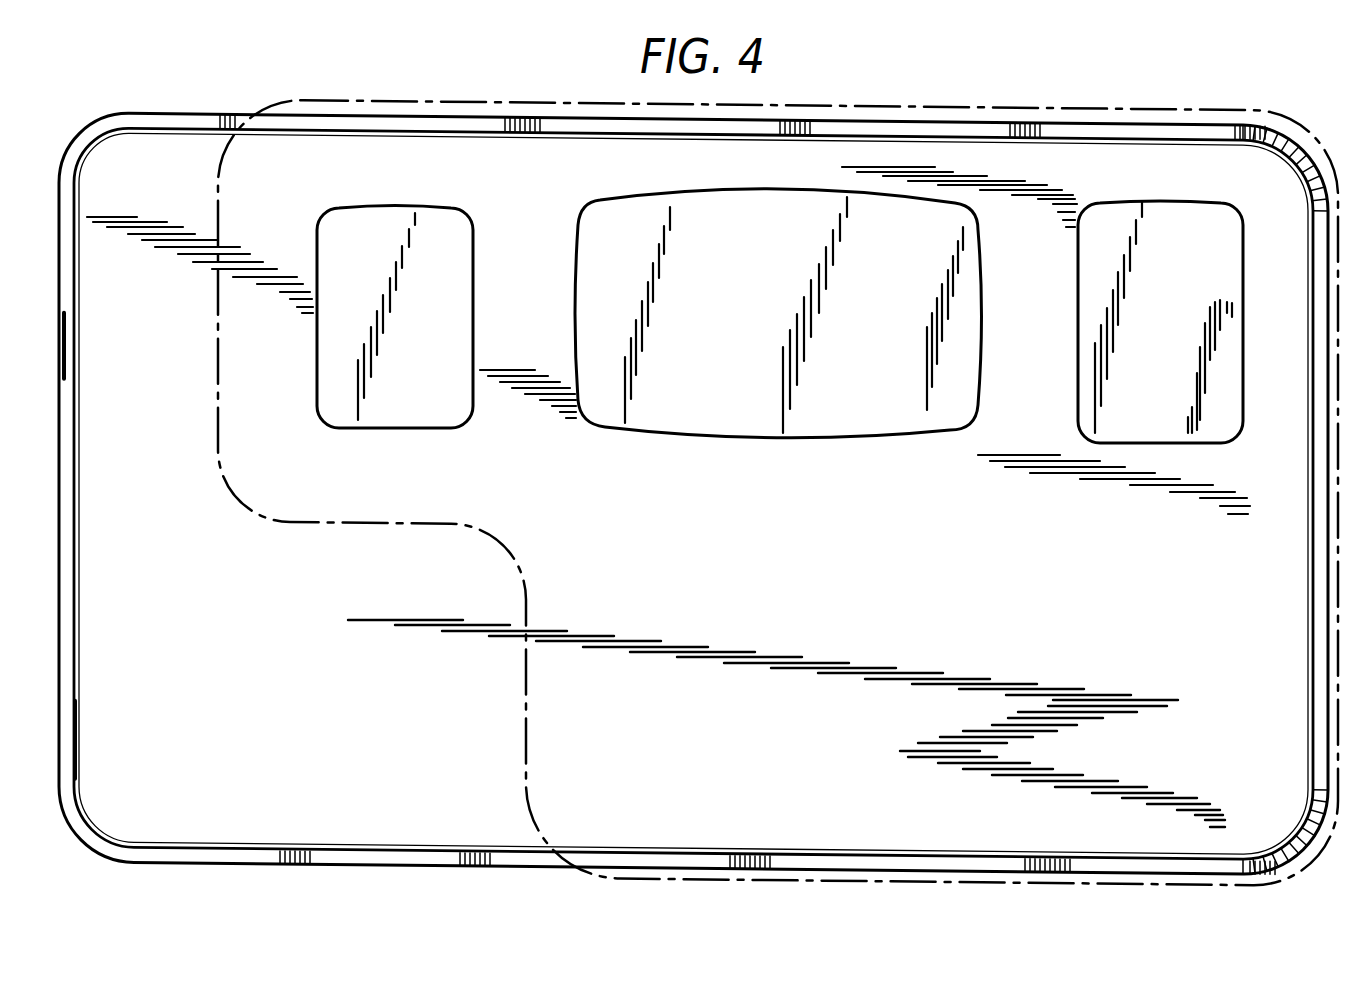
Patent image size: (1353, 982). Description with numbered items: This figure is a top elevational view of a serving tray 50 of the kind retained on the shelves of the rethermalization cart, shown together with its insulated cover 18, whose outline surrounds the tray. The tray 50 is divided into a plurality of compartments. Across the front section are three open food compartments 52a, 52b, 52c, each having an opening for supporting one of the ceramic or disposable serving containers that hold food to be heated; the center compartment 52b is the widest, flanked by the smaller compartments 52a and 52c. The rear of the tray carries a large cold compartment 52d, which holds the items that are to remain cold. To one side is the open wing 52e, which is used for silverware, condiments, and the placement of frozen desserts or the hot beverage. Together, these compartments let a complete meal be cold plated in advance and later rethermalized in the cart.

The tray 50 is at (1336, 230).
The insulated cover 18 is at (526, 760).
The food compartment 52a is at (412, 433).
The food compartment 52b is at (767, 443).
The food compartment 52c is at (1157, 447).
The cold compartment 52d is at (893, 641).
The open wing 52e is at (295, 712).